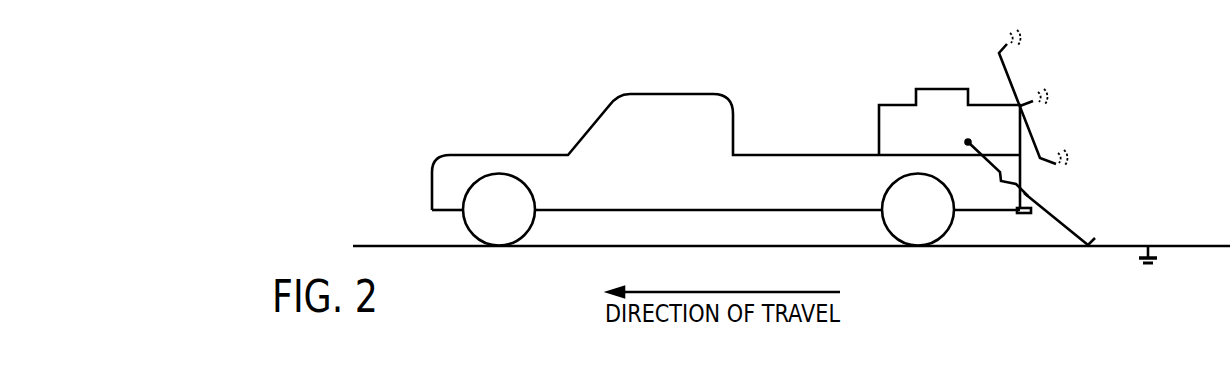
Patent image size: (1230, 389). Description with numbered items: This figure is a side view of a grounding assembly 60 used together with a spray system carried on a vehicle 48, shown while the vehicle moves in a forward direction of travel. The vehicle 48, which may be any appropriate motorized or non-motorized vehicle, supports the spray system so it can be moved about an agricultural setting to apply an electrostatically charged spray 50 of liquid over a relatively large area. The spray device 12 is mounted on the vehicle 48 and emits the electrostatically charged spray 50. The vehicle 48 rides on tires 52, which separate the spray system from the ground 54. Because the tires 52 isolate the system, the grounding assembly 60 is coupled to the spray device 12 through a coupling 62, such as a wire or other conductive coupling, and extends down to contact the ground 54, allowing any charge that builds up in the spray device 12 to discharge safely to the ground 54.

The spray device 12 is at (941, 89).
The vehicle 48 is at (510, 155).
The electrostatically charged spray 50 is at (1045, 92).
The tires 52 is at (950, 229).
The ground 54 is at (1204, 246).
The grounding assembly 60 is at (1064, 233).
The coupling 62 is at (1034, 197).